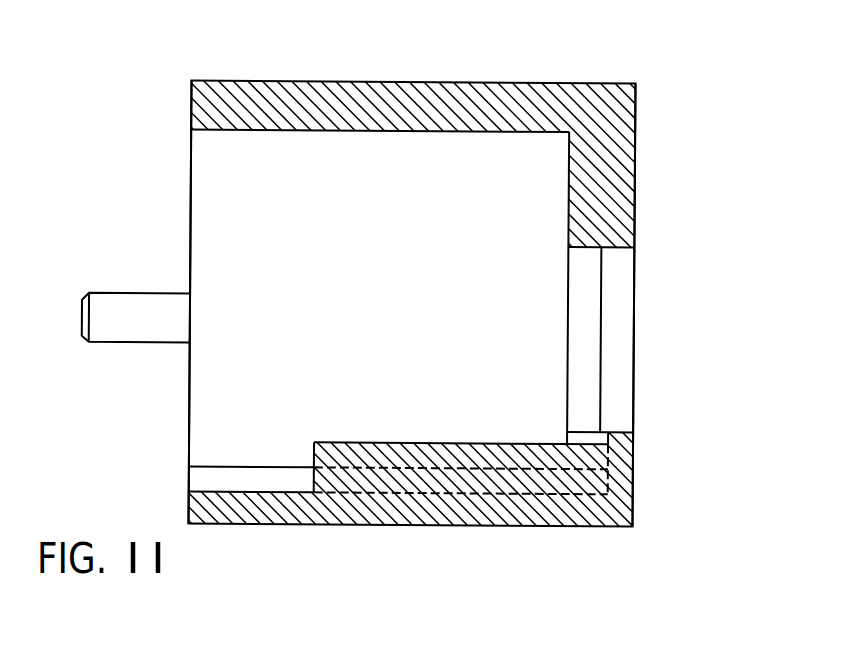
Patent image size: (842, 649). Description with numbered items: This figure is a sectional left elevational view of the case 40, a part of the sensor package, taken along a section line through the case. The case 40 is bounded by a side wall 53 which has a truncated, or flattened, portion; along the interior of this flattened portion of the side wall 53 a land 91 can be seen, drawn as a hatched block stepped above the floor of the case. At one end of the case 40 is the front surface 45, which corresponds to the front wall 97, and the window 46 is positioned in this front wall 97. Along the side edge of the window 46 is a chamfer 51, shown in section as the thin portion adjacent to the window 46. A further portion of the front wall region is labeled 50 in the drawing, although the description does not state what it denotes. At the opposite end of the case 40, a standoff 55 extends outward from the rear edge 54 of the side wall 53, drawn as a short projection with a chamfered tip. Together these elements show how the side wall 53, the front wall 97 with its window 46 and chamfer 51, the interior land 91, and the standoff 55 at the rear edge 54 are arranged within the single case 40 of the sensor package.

The case 40 is at (492, 103).
The side wall 53 is at (318, 100).
The front surface 45 is at (648, 175).
The front wall 97 is at (627, 210).
The recess 50 is at (648, 287).
The chamfer 51 is at (623, 372).
The window 46 is at (648, 422).
The land 91 is at (325, 450).
The rear edge 54 is at (180, 203).
The standoff 55 is at (112, 340).